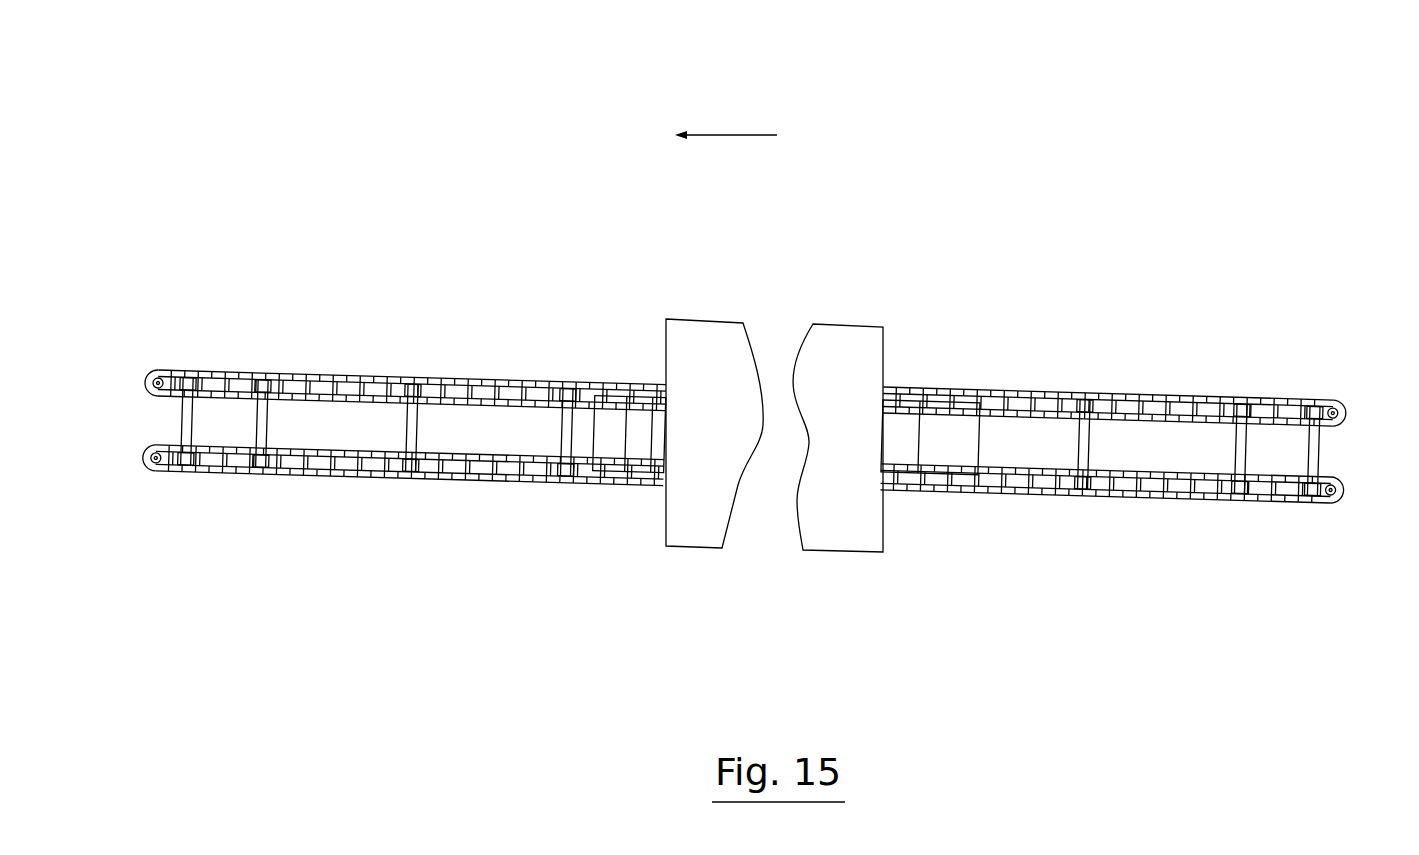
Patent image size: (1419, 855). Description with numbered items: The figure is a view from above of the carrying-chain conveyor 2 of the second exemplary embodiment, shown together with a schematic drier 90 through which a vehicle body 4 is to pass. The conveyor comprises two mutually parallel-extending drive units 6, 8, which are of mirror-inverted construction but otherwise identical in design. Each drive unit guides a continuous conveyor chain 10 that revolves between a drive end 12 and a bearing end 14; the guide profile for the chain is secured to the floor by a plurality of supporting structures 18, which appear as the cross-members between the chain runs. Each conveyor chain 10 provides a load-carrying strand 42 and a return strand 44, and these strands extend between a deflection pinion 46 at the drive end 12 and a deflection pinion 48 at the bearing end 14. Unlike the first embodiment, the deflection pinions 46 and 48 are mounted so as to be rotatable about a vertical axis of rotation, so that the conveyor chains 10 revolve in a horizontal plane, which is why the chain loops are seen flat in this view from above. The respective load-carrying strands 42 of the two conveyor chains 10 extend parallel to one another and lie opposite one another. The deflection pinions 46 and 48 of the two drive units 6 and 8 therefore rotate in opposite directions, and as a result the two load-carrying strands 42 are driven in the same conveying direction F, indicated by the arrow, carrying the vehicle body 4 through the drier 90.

The carrying-chain conveyor 2 is at (748, 359).
The vehicle body 4 is at (612, 395).
The drive unit 6 is at (1208, 388).
The drive unit 8 is at (1174, 508).
The conveyor chain 10 is at (1106, 446).
The drive end 12 is at (389, 413).
The bearing end 14 is at (1131, 446).
The supporting structure 18 is at (373, 479).
The load-carrying strand 42 is at (500, 395).
The return strand 44 is at (445, 378).
The deflection pinion 46 is at (153, 372).
The deflection pinion 48 is at (1340, 405).
The drier 90 is at (855, 345).
The conveying direction F is at (748, 135).